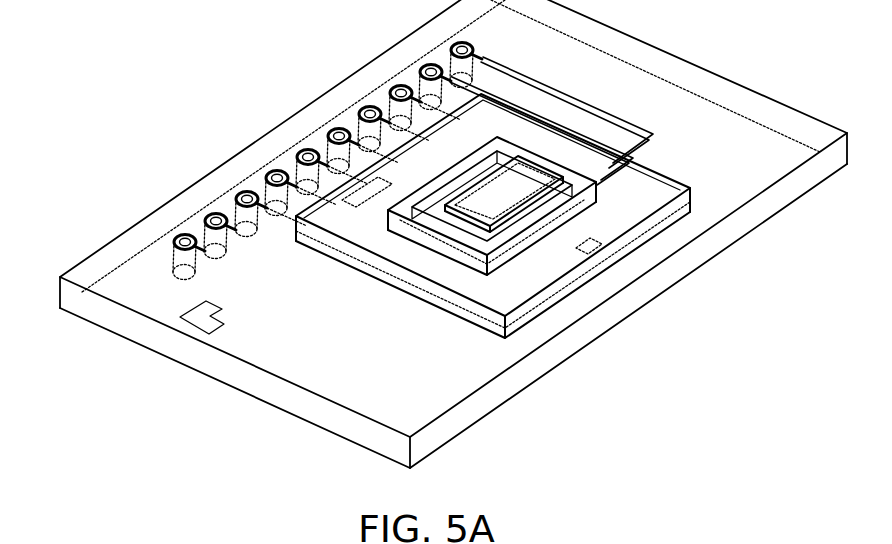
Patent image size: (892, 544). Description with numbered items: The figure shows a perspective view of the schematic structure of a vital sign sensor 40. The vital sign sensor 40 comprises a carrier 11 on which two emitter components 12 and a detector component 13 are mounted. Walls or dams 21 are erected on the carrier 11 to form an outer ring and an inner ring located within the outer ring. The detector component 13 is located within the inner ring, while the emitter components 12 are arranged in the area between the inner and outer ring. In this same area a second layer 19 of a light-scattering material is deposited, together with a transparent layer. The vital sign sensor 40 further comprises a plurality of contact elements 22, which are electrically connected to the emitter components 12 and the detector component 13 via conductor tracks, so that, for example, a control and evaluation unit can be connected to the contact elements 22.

The vital sign sensor 40 is at (108, 32).
The carrier 11 is at (125, 253).
The emitter components 12 is at (322, 150).
The contact elements 22 is at (402, 72).
The second layer 19 is at (372, 231).
The walls or dams 21 is at (618, 180).
The detector component 13 is at (480, 237).